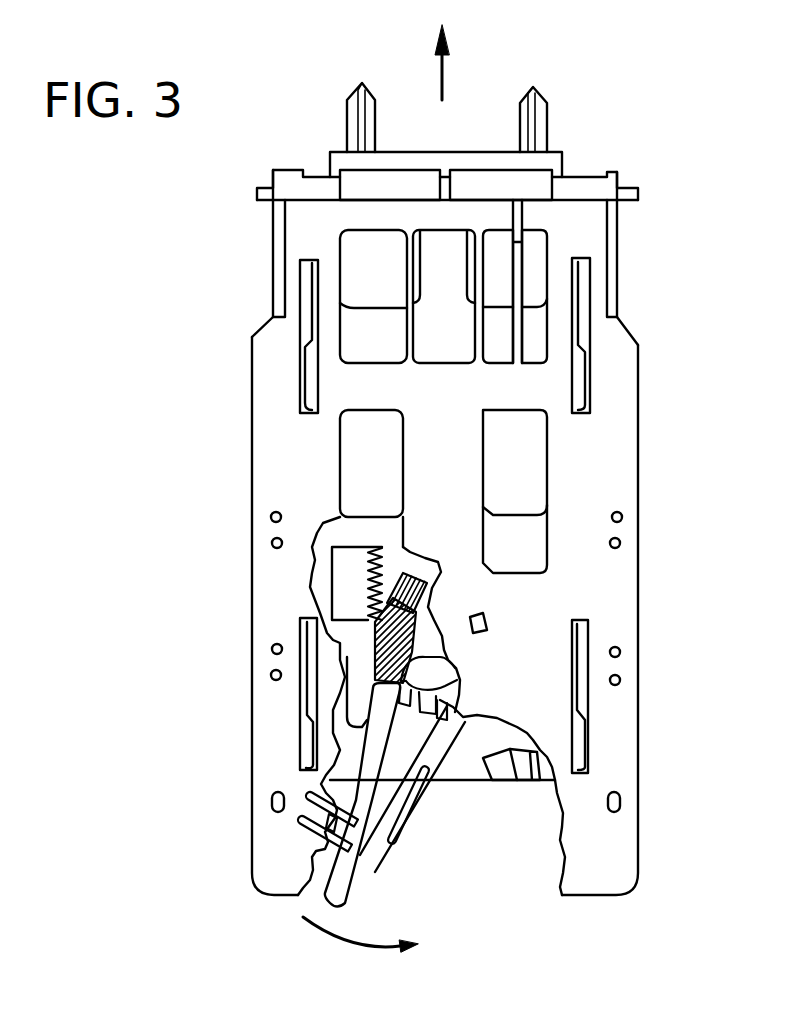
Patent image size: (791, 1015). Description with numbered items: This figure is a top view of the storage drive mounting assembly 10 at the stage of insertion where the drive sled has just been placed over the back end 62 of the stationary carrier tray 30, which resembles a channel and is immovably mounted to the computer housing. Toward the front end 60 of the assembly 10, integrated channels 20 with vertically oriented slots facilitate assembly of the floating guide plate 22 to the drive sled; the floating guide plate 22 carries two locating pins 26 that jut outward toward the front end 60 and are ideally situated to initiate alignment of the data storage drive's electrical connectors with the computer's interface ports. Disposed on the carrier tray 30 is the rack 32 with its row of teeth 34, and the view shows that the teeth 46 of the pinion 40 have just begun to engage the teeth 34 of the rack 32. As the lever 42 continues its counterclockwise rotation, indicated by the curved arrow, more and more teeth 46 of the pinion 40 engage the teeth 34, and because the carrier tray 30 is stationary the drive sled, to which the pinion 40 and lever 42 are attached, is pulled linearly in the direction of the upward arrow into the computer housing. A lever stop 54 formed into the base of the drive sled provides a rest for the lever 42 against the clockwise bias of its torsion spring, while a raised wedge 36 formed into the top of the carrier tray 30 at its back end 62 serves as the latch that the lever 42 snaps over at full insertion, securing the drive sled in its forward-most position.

The storage drive mounting assembly 10 is at (226, 304).
The channels 20 is at (620, 177).
The floating guide plate 22 is at (548, 163).
The locating pins 26 is at (358, 84).
The carrier tray 30 is at (472, 771).
The rack 32 is at (347, 587).
The teeth 34 is at (365, 553).
The raised wedge 36 is at (530, 772).
The pinion 40 is at (373, 650).
The lever 42 is at (343, 877).
The teeth 46 is at (412, 572).
The lever stop 54 is at (327, 835).
The front end 60 is at (488, 107).
The back end 62 is at (432, 817).